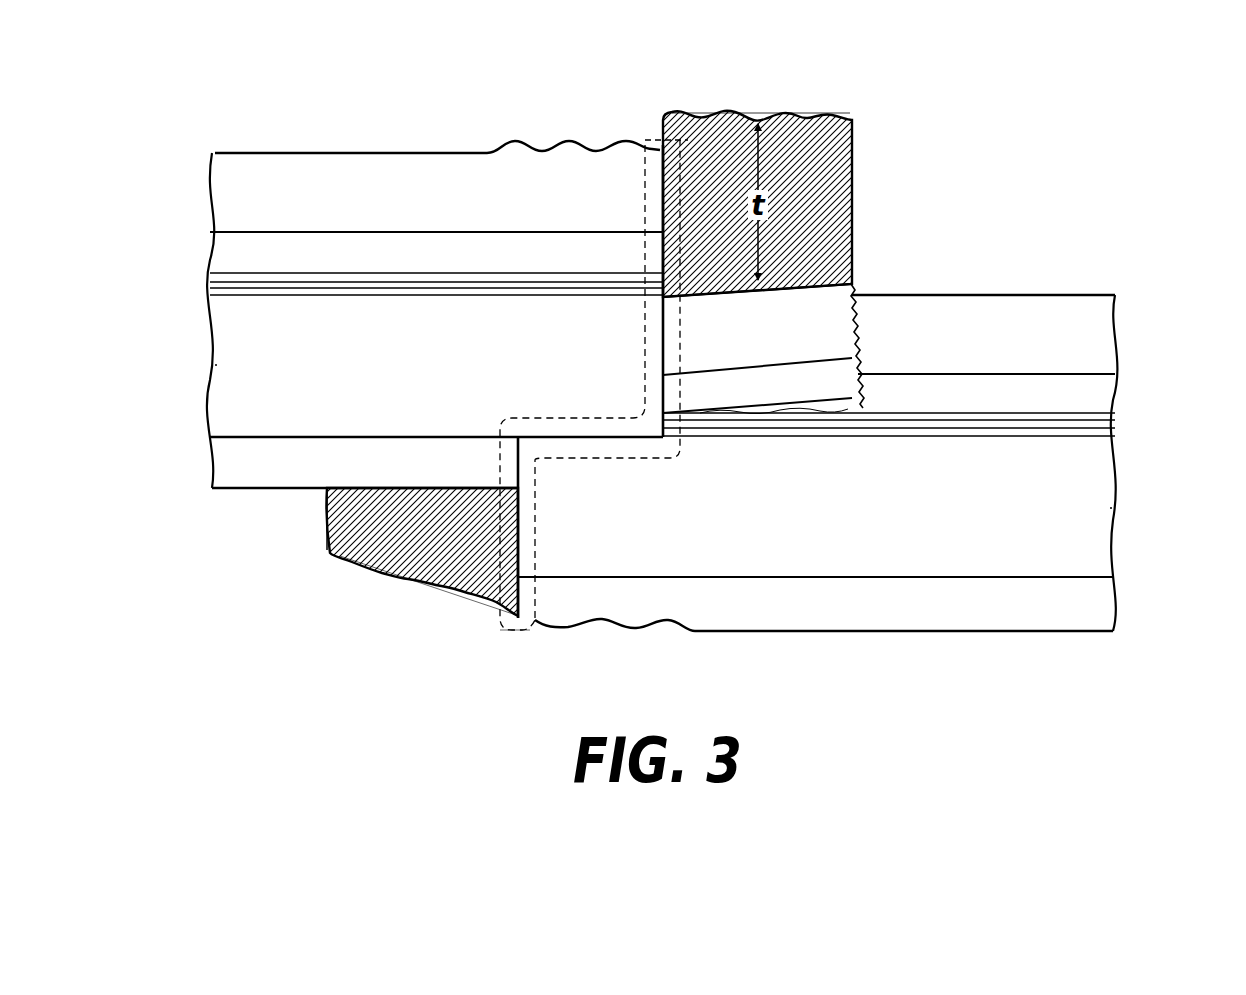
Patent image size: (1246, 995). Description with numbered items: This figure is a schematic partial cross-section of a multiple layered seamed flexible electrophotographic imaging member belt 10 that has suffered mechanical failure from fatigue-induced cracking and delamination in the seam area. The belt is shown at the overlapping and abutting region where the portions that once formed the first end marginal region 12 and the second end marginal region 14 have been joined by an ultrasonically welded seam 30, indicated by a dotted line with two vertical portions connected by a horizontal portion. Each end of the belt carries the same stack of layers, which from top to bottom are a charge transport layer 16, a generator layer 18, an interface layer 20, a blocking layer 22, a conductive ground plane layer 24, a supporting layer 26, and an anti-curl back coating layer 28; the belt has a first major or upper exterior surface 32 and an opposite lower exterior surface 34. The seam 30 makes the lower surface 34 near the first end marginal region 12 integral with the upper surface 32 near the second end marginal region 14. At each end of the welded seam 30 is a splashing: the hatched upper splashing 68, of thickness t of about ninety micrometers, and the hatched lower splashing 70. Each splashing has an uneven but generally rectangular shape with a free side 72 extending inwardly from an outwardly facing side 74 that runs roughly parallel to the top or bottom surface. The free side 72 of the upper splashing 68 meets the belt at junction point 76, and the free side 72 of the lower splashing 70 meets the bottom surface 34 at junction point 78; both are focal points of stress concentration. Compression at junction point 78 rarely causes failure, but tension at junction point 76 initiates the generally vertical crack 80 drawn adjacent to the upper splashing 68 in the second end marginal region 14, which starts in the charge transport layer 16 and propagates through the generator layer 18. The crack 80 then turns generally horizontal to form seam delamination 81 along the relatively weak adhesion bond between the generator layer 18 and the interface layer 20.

The flexible electrophotographic imaging member belt 10 is at (1062, 170).
The first end marginal region 12 is at (580, 92).
The second end marginal region 14 is at (580, 650).
The charge transport layer 16 is at (218, 183).
The generator layer 18 is at (220, 248).
The interface layer 20 is at (212, 279).
The blocking layer 22 is at (212, 286).
The conductive ground plane layer 24 is at (212, 292).
The supporting layer 26 is at (218, 372).
The anti-curl back coating layer 28 is at (218, 455).
The seam 30 is at (500, 635).
The upper exterior surface 32 is at (332, 153).
The lower exterior surface 34 is at (236, 490).
The upper splashing 68 is at (876, 97).
The lower splashing 70 is at (378, 597).
The free side 72 is at (855, 152).
The outwardly facing side 74 is at (746, 112).
The junction point 76 is at (856, 284).
The junction point 78 is at (325, 500).
The crack 80 is at (858, 297).
The seam delamination 81 is at (840, 410).